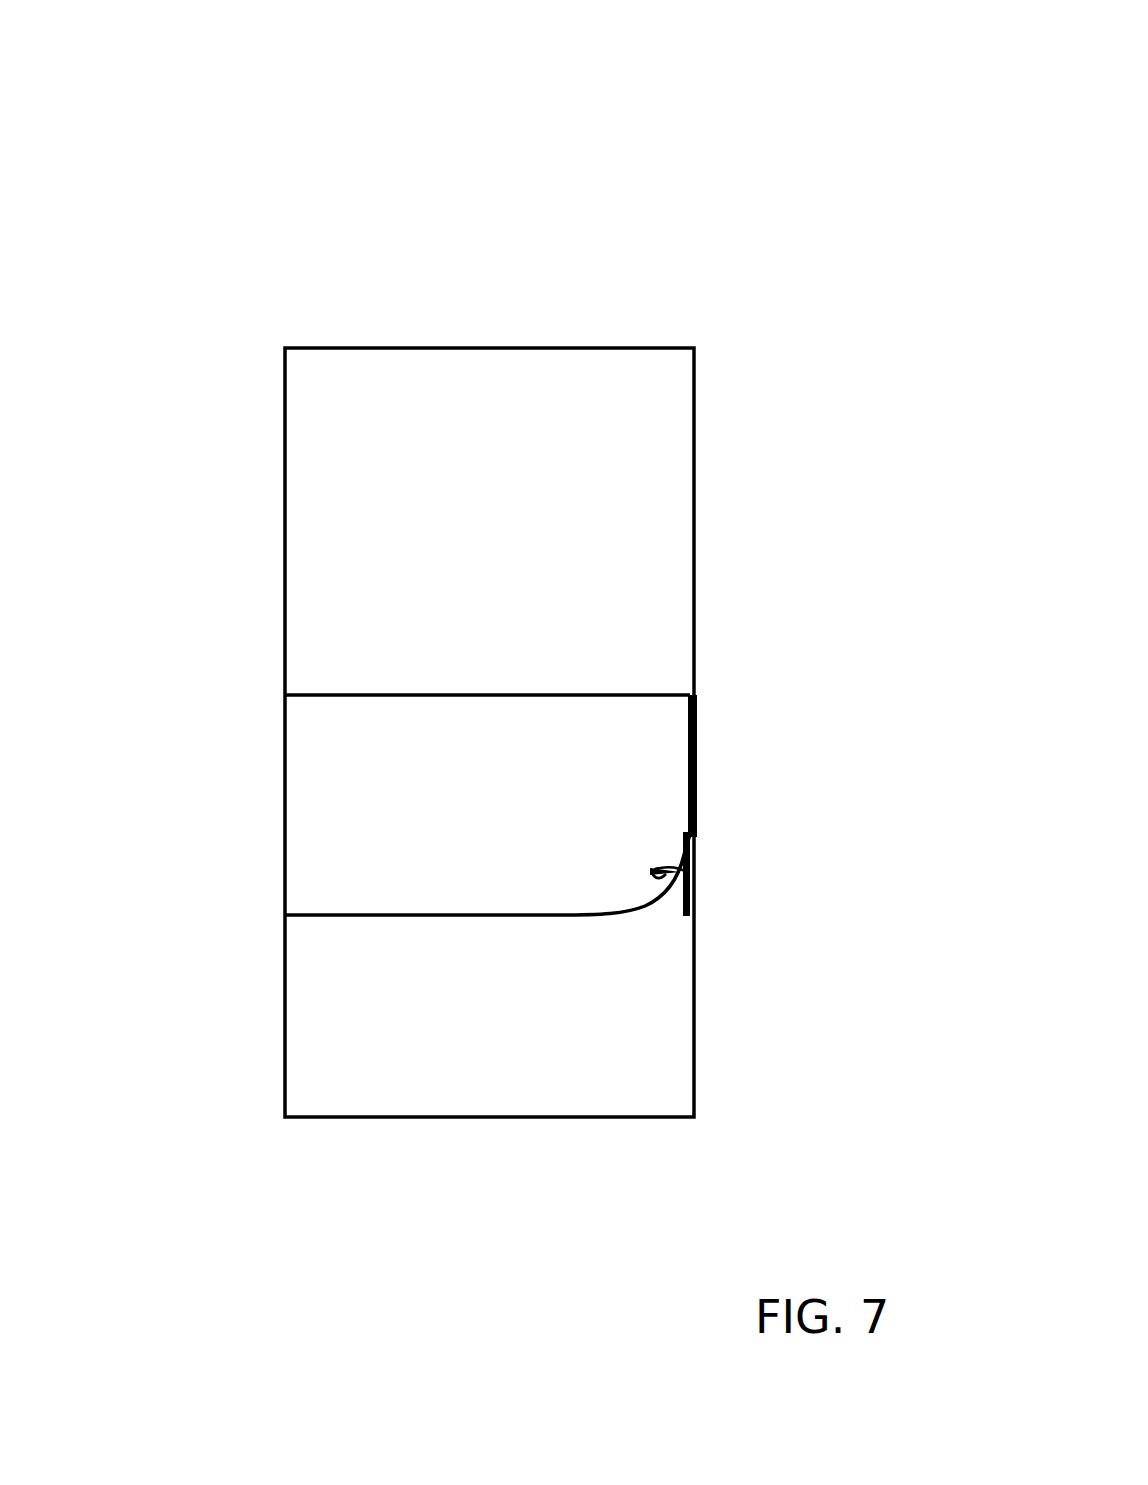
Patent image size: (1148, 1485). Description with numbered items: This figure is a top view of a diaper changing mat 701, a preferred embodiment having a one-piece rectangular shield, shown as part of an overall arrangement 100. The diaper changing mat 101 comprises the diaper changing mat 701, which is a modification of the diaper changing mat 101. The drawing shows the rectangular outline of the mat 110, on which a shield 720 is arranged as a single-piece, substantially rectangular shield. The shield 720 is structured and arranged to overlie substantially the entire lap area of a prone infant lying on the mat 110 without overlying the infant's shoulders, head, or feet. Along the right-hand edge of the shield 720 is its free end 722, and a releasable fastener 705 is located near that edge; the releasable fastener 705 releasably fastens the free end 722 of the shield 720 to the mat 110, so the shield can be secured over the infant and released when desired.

The apparatus 100 is at (218, 98).
The diaper changing mat 101 is at (218, 160).
The diaper changing mat 701 is at (218, 224).
The mat 110 is at (474, 360).
The shield 720 is at (661, 662).
The free end 722 is at (697, 803).
The releasable fastener 705 is at (686, 907).